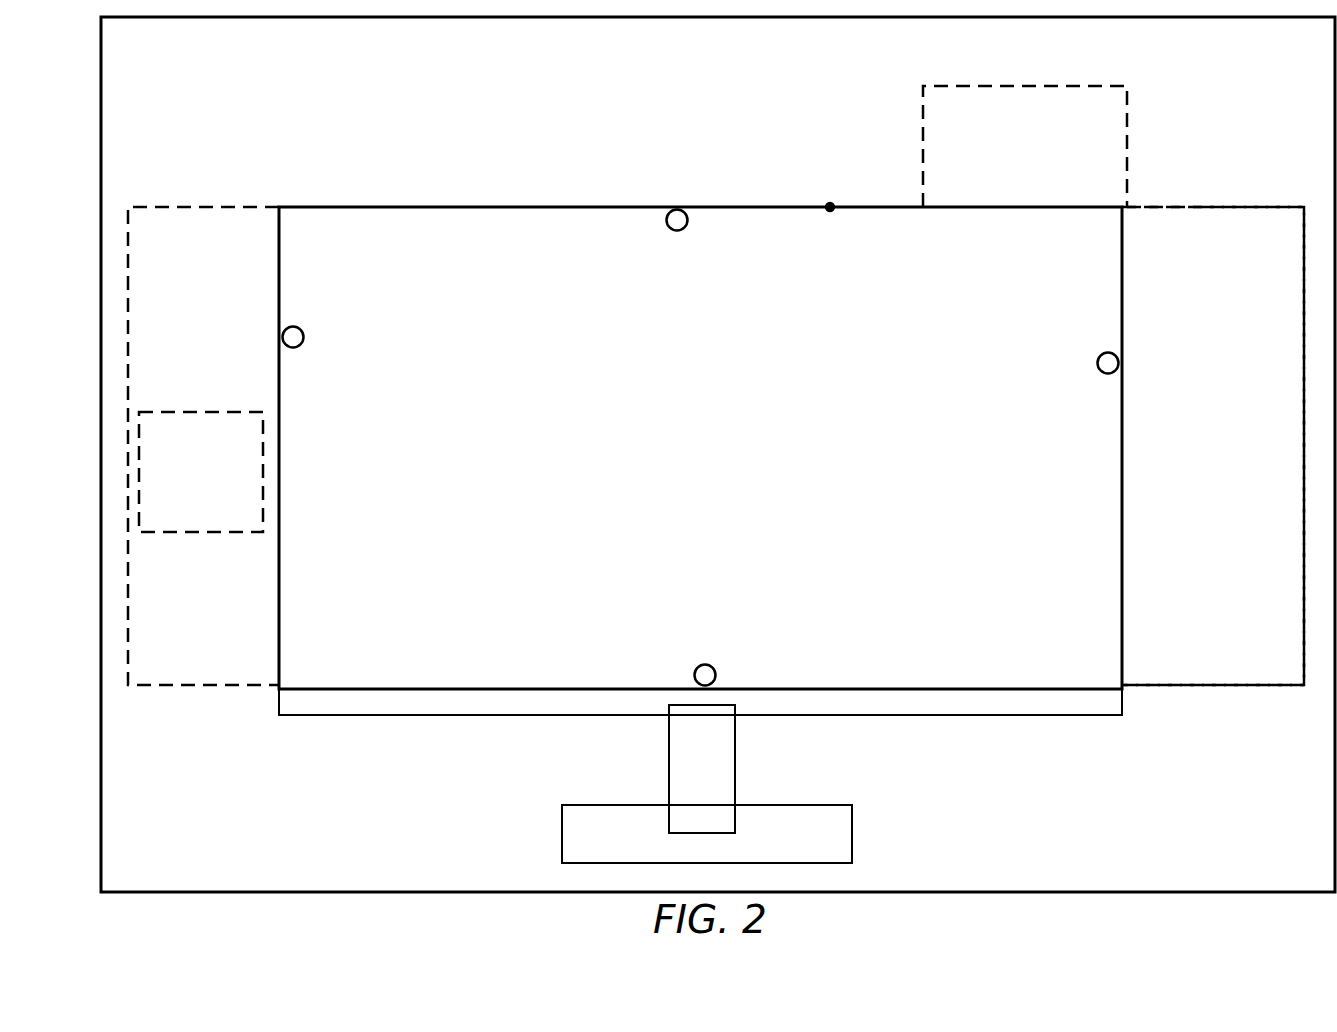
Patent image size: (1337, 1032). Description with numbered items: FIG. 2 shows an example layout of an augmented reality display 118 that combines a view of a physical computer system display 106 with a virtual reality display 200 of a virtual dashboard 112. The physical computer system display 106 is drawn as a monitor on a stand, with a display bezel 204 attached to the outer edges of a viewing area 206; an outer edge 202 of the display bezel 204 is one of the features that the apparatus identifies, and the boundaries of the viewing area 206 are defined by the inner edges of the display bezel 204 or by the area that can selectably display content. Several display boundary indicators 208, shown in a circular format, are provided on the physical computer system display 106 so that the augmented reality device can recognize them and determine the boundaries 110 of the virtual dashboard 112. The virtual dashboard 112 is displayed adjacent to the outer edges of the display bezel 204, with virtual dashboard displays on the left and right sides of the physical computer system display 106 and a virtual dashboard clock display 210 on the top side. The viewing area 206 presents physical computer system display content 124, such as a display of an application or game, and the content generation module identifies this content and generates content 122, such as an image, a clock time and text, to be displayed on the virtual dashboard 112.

The physical computer system display 106 is at (558, 158).
The boundaries of the virtual dashboard 110 is at (1220, 205).
The virtual dashboard 112 is at (1180, 205).
The augmented reality display 118 is at (717, 107).
The content 122 is at (196, 412).
The physical computer system display content 124 is at (697, 430).
The virtual reality display 200 is at (205, 187).
The outer edge 202 is at (457, 203).
The display bezel 204 is at (828, 205).
The viewing area 206 is at (312, 652).
The display boundary indicators 208 is at (686, 230).
The virtual dashboard clock display 210 is at (920, 178).